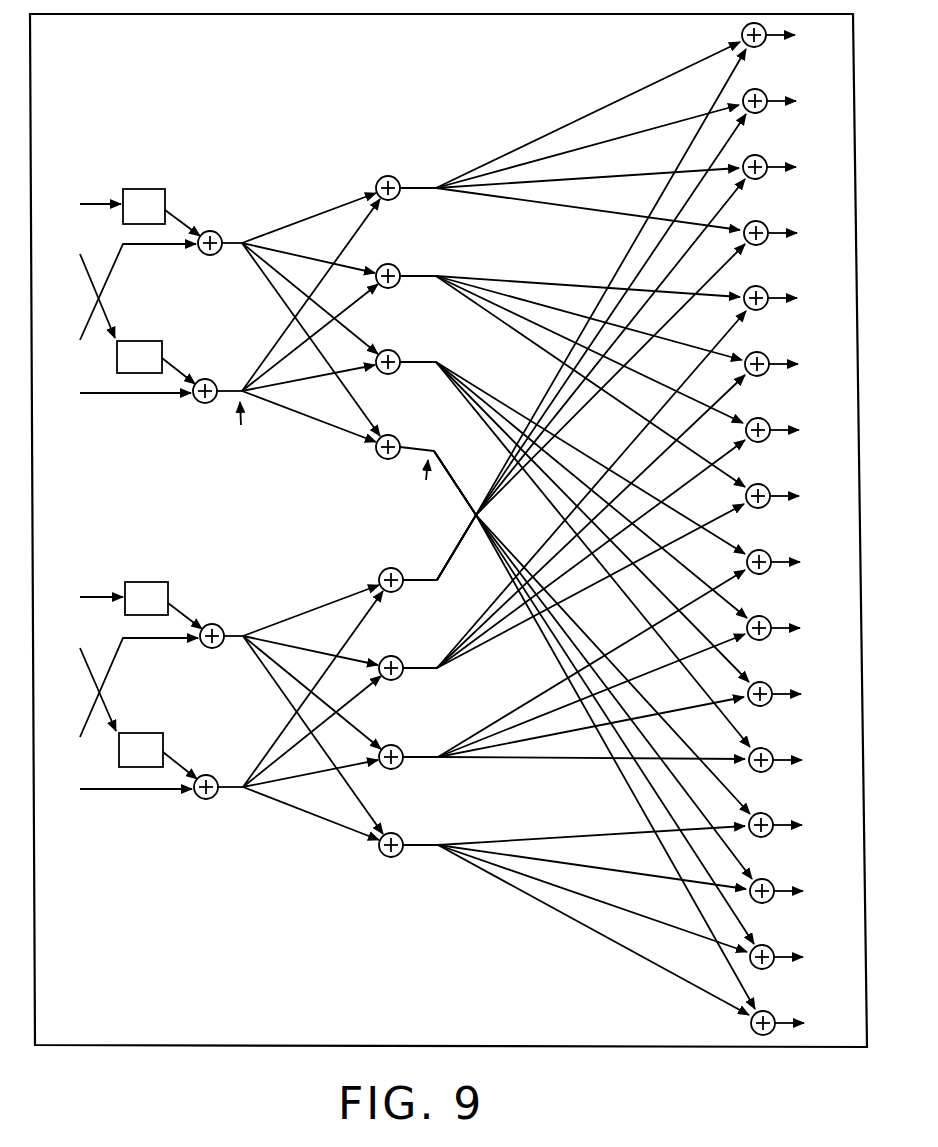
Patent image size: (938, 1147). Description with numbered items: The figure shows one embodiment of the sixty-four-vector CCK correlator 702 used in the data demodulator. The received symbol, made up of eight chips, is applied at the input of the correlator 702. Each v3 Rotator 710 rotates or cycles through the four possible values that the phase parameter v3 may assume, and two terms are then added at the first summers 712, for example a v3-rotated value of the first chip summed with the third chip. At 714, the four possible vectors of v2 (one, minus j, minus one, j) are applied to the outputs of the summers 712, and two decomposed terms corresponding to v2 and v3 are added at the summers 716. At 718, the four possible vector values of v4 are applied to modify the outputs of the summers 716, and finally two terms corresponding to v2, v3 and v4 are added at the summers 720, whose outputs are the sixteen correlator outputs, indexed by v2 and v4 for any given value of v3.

The CCK 64-vector correlator 702 is at (238, 918).
The v3 Rotator 710 is at (142, 182).
The summers 712 is at (212, 228).
The application of v2 vectors 714 is at (245, 234).
The summers 716 is at (392, 173).
The outputs of the summers 716 with v4 vectors applied 718 is at (445, 172).
The summers 720 is at (728, 36).